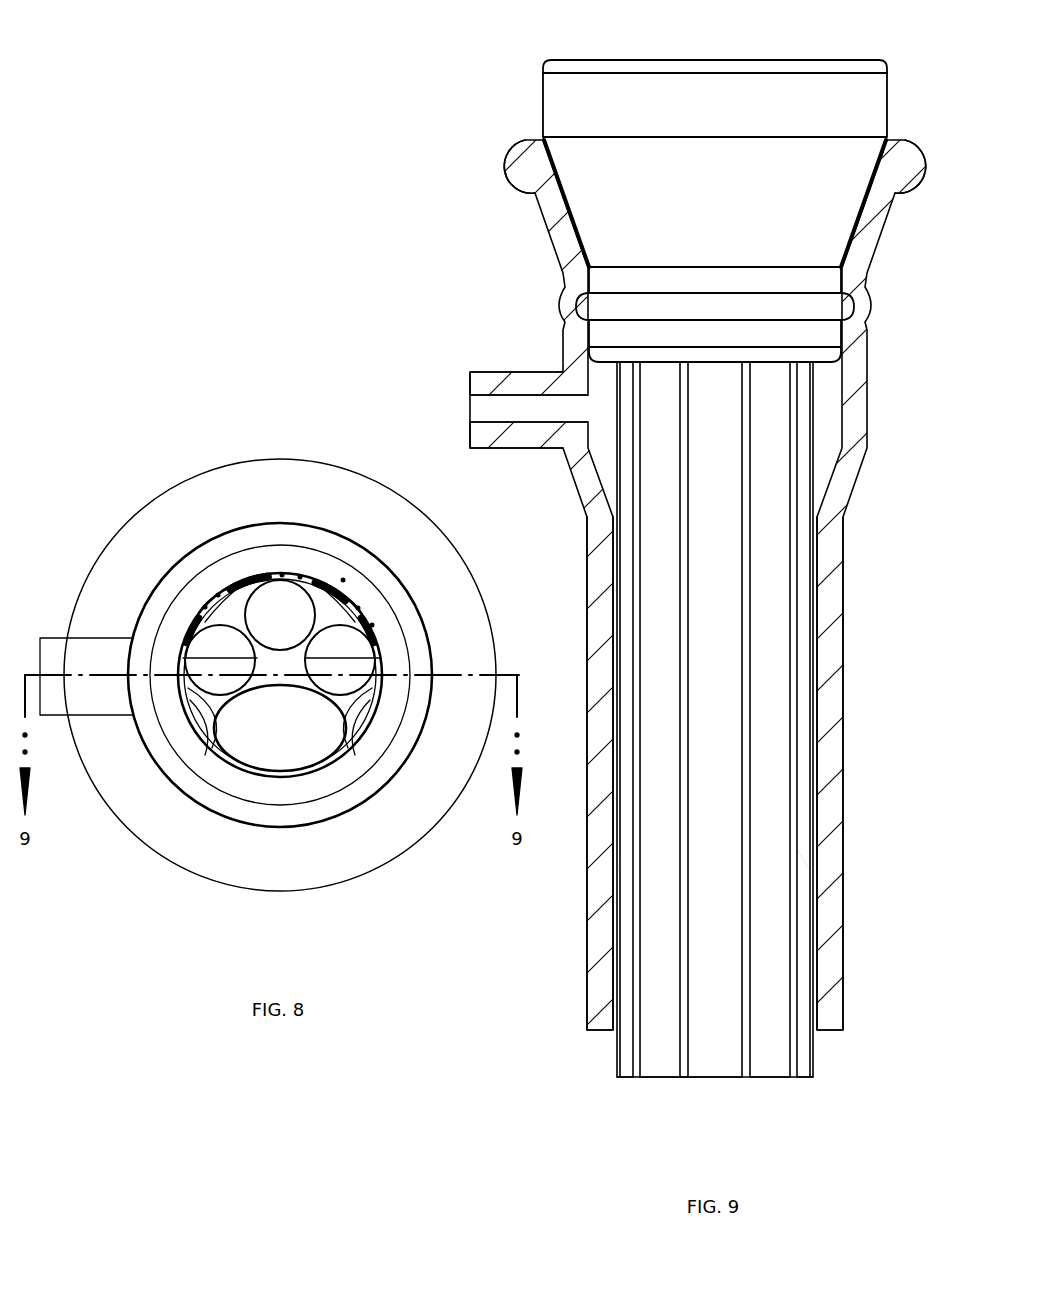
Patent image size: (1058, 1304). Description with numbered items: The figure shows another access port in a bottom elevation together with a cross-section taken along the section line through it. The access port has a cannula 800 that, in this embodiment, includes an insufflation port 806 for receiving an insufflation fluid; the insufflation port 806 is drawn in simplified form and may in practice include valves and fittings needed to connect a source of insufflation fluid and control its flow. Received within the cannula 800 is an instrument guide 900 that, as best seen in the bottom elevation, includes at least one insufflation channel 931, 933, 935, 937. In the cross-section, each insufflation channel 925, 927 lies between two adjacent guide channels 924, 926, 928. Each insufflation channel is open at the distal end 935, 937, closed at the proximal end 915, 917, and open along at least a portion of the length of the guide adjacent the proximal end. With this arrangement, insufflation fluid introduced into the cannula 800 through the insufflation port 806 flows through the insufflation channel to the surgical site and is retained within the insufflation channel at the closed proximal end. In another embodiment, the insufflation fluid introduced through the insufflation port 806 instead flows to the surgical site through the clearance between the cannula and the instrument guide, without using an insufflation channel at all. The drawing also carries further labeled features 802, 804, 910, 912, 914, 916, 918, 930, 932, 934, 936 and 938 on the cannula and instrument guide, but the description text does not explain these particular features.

In FIG. 8, the cannula 800 is at (308, 522).
In FIG. 9, the cannula 800 is at (560, 352).
In FIG. 8, the flange 802 is at (282, 460).
In FIG. 9, the flange 802 is at (498, 163).
In FIG. 8, the tubular extension 804 is at (283, 645).
In FIG. 9, the tubular extension 804 is at (598, 1032).
In FIG. 8, the insufflation port 806 is at (88, 716).
In FIG. 9, the insufflation port 806 is at (483, 372).
In FIG. 9, the instrument guide 900 is at (541, 104).
In FIG. 9, the funnel insert 910 is at (710, 58).
In FIG. 8, the inner tube wall 912 is at (326, 765).
In FIG. 8, the first lumen 914 is at (368, 622).
In FIG. 9, the first lumen 914 is at (770, 365).
In FIG. 9, the closed proximal end of insufflation channel 915 is at (714, 365).
In FIG. 8, the second lumen 916 is at (259, 575).
In FIG. 9, the second lumen 916 is at (803, 365).
In FIG. 9, the closed proximal end of insufflation channel 917 is at (658, 370).
In FIG. 8, the fourth lumen 918 is at (196, 618).
In FIG. 9, the fourth lumen 918 is at (622, 370).
In FIG. 9, the guide channel 924 is at (804, 862).
In FIG. 9, the insufflation channel 925 is at (768, 887).
In FIG. 9, the guide channel 926 is at (716, 903).
In FIG. 9, the insufflation channel 927 is at (662, 887).
In FIG. 9, the guide channel 928 is at (618, 870).
In FIG. 8, the channel 930 is at (238, 584).
In FIG. 9, the channel 930 is at (682, 1080).
In FIG. 8, the insufflation channel 931 is at (205, 702).
In FIG. 8, the channel 932 is at (280, 690).
In FIG. 8, the insufflation channel 933 is at (373, 722).
In FIG. 8, the channel 934 is at (381, 655).
In FIG. 9, the channel 934 is at (805, 1079).
In FIG. 8, the insufflation channel open distal end 935 is at (334, 582).
In FIG. 9, the insufflation channel open distal end 935 is at (768, 1080).
In FIG. 8, the channel 936 is at (306, 580).
In FIG. 9, the channel 936 is at (716, 1080).
In FIG. 8, the insufflation channel open distal end 937 is at (212, 600).
In FIG. 9, the insufflation channel open distal end 937 is at (660, 1080).
In FIG. 8, the channel 938 is at (185, 690).
In FIG. 9, the channel 938 is at (623, 1079).